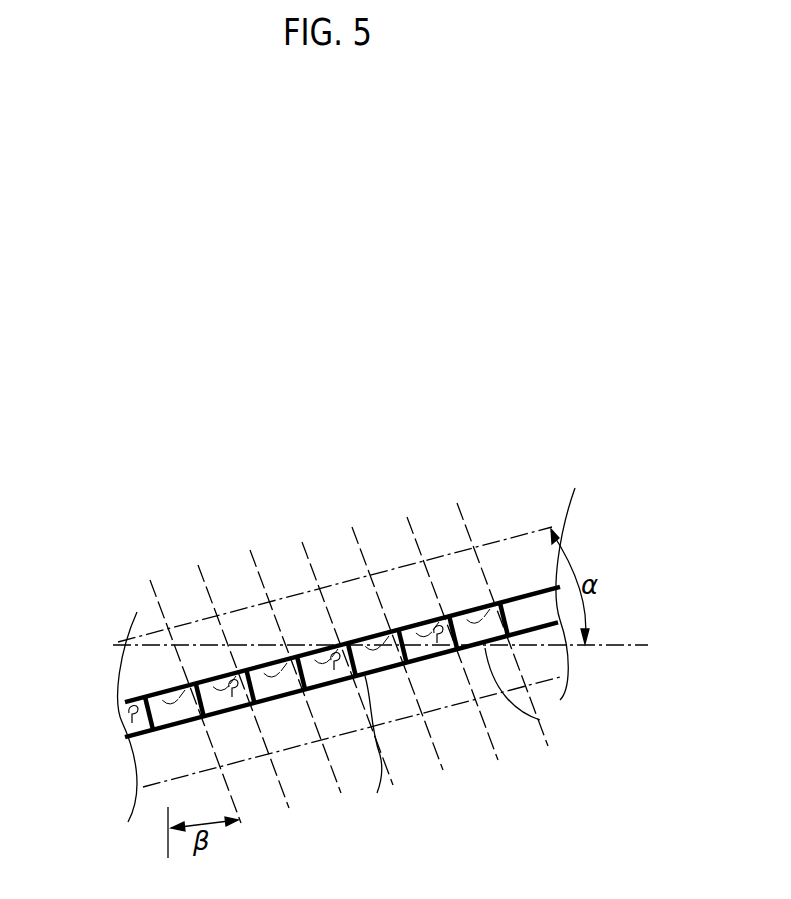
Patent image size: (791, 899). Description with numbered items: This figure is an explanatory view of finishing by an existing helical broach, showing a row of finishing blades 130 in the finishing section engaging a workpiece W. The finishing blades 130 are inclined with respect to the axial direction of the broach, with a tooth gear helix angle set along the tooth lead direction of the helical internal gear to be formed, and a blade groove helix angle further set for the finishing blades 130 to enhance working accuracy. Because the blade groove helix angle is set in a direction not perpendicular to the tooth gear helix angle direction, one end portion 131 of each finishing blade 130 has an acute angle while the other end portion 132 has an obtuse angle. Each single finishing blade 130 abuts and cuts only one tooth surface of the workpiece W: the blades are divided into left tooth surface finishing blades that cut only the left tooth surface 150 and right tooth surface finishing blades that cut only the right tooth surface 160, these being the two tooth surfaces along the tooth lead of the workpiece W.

The finishing blade 130 is at (497, 602).
The one end portion 131 is at (163, 692).
The other end portion 132 is at (370, 775).
The left tooth surface 150 is at (127, 720).
The right tooth surface 160 is at (127, 727).
The workpiece W is at (127, 680).